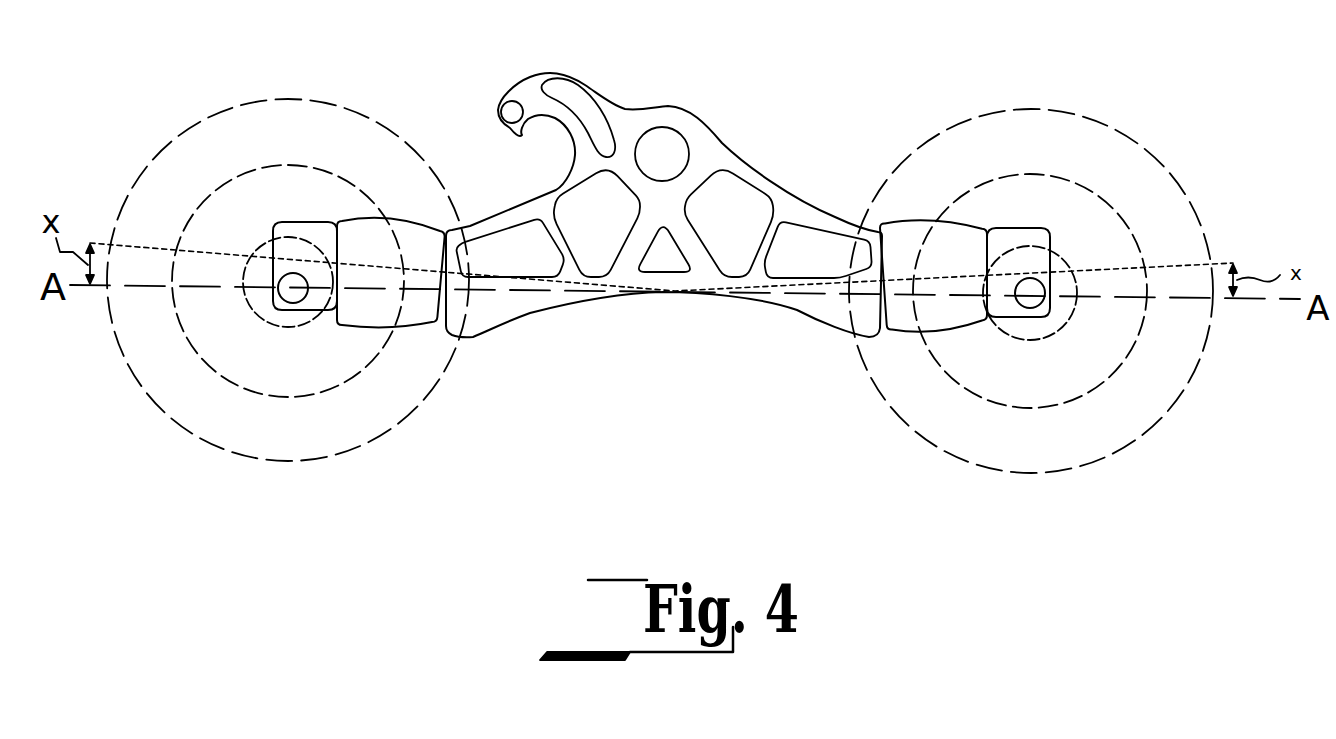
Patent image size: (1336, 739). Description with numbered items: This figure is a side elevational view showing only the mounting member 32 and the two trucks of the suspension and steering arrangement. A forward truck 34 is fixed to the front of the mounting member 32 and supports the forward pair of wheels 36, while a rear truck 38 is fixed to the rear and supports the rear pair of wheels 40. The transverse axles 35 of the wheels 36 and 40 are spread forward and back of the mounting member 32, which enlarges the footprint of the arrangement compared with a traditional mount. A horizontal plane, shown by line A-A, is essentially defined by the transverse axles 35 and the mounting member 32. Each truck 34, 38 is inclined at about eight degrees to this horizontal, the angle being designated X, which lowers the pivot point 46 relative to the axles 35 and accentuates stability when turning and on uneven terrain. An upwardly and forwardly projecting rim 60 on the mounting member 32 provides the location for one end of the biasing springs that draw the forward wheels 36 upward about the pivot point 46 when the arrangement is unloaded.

The mounting member 32 is at (533, 317).
The forward truck 34 is at (353, 216).
The transverse axles 35 is at (302, 303).
The forward wheels 36 is at (172, 143).
The rear truck 38 is at (921, 216).
The rear wheels 40 is at (1145, 154).
The pivot point 46 is at (670, 146).
The rim 60 is at (523, 137).